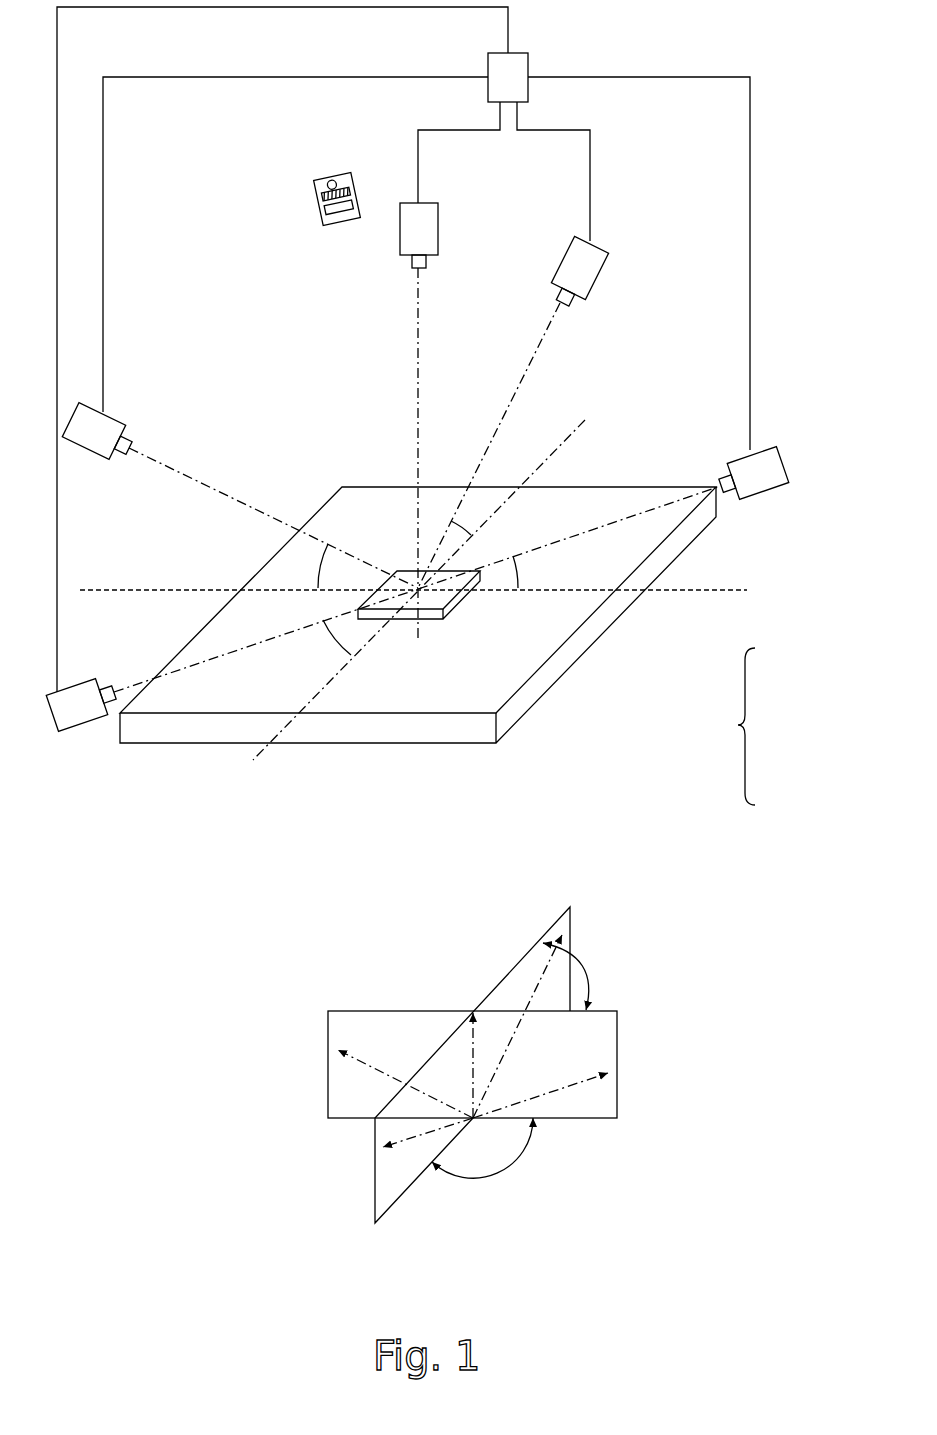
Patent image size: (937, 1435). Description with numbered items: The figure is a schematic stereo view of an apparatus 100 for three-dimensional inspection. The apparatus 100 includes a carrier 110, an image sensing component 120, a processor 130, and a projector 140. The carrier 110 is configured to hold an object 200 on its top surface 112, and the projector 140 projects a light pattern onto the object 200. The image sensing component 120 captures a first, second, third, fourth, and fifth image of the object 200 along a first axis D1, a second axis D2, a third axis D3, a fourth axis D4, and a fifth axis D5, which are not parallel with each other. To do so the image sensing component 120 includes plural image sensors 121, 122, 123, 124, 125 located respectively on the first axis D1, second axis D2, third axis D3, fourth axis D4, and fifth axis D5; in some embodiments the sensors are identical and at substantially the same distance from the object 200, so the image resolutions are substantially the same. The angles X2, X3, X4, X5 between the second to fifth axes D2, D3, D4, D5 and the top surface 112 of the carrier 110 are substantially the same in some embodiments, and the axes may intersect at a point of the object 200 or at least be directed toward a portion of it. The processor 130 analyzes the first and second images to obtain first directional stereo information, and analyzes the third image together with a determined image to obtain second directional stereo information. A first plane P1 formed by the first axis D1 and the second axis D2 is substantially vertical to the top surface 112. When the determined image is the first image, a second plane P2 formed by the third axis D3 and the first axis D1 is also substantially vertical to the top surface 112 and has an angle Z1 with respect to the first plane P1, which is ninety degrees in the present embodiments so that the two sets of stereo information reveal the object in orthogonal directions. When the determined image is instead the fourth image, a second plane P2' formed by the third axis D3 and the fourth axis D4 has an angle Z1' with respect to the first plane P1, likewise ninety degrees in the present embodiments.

The apparatus for three-dimensional inspection 100 is at (868, 34).
The carrier 110 is at (205, 735).
The top surface 112 is at (155, 705).
The image sensing component 120 is at (752, 725).
The image sensor 121 is at (438, 228).
The image sensor 122 is at (765, 498).
The image sensor 123 is at (590, 270).
The image sensor 124 is at (82, 717).
The image sensor 125 is at (95, 448).
The processor 130 is at (515, 65).
The projector 140 is at (313, 185).
The object 200 is at (390, 620).
The first axis D1 is at (415, 316).
The second axis D2 is at (620, 518).
The third axis D3 is at (543, 343).
The fourth axis D4 is at (130, 687).
The fifth axis D5 is at (173, 470).
The angle X2 is at (536, 572).
The angle X3 is at (474, 513).
The angle X4 is at (328, 643).
The angle X5 is at (306, 566).
The first plane P1 is at (588, 1108).
The second plane P2 is at (472, 1054).
The second plane P2' is at (426, 1211).
The angle Z1 is at (610, 976).
The angle Z1' is at (490, 1174).